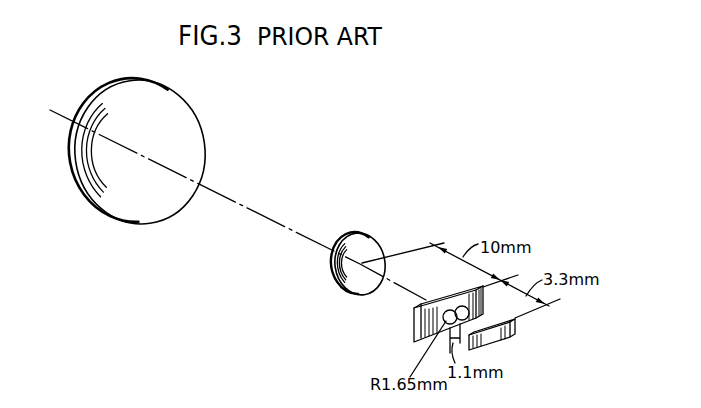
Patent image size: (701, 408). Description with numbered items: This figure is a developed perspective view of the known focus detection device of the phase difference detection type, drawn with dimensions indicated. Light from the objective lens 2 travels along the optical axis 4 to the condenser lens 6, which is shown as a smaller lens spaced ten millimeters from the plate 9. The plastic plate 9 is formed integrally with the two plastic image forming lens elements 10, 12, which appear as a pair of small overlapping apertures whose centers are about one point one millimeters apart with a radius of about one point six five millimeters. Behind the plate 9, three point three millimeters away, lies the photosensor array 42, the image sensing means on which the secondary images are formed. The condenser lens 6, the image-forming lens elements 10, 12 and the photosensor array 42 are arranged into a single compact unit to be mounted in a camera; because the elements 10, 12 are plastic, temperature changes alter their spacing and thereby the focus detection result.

The objective lens 2 is at (102, 217).
The optical axis 4 is at (252, 213).
The condenser lens 6 is at (343, 290).
The plastic plate 9 is at (412, 328).
The image forming lens element 10 is at (444, 312).
The image forming lens element 12 is at (458, 306).
The photosensor array 42 is at (497, 343).